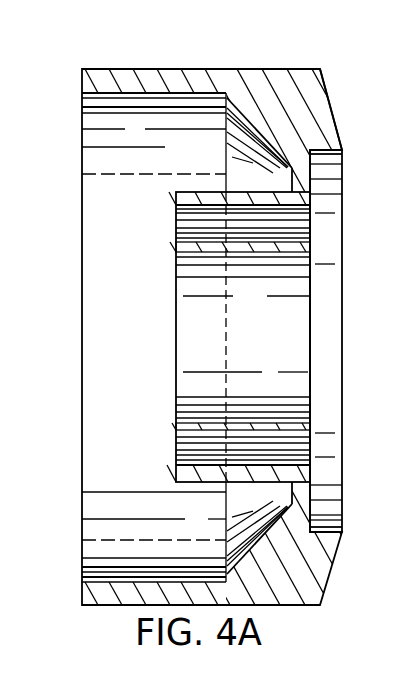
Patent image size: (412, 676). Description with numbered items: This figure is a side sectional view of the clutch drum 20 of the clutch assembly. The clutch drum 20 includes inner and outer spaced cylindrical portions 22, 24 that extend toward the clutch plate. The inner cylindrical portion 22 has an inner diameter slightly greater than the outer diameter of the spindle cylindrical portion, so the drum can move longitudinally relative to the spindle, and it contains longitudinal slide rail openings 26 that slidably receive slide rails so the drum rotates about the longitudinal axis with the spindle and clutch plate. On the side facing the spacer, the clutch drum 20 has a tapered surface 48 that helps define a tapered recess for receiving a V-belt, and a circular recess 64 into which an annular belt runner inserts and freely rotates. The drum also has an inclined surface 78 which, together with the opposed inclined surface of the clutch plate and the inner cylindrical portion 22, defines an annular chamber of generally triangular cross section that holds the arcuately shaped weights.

The clutch drum 20 is at (192, 66).
The inner cylindrical portion 22 is at (175, 474).
The outer cylindrical portion 24 is at (112, 68).
The slide rail openings 26 is at (312, 227).
The tapered surface 48 is at (332, 100).
The circular recess 64 is at (326, 323).
The inclined surface 78 is at (228, 146).